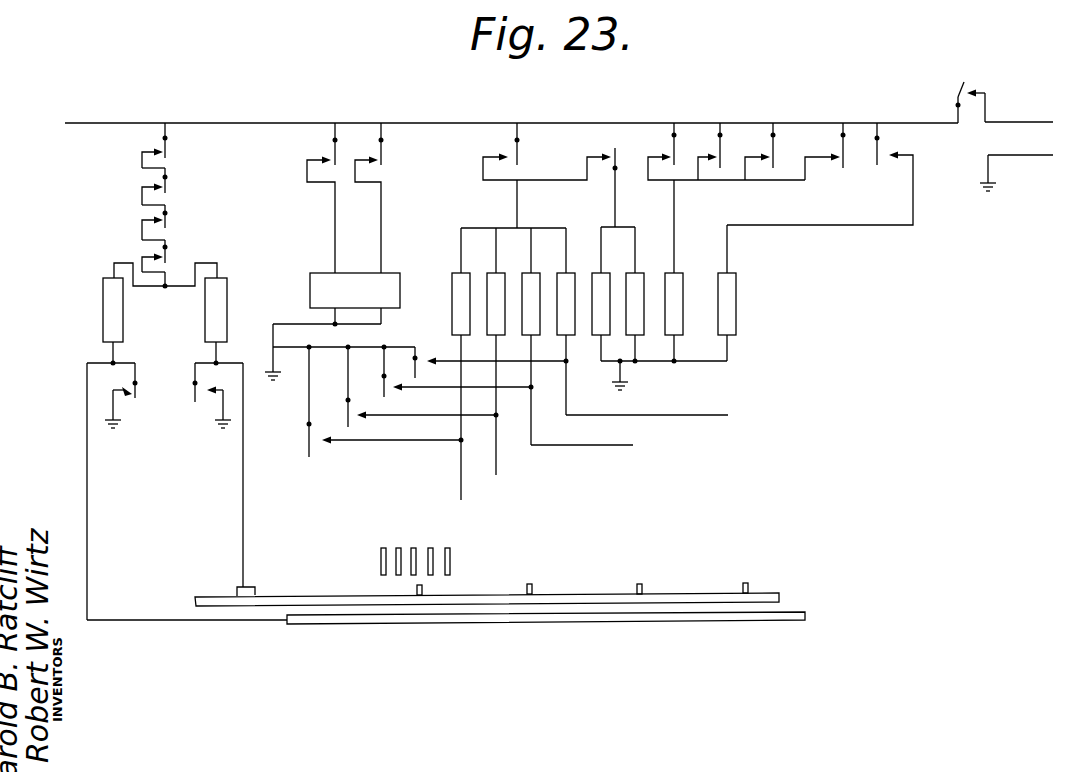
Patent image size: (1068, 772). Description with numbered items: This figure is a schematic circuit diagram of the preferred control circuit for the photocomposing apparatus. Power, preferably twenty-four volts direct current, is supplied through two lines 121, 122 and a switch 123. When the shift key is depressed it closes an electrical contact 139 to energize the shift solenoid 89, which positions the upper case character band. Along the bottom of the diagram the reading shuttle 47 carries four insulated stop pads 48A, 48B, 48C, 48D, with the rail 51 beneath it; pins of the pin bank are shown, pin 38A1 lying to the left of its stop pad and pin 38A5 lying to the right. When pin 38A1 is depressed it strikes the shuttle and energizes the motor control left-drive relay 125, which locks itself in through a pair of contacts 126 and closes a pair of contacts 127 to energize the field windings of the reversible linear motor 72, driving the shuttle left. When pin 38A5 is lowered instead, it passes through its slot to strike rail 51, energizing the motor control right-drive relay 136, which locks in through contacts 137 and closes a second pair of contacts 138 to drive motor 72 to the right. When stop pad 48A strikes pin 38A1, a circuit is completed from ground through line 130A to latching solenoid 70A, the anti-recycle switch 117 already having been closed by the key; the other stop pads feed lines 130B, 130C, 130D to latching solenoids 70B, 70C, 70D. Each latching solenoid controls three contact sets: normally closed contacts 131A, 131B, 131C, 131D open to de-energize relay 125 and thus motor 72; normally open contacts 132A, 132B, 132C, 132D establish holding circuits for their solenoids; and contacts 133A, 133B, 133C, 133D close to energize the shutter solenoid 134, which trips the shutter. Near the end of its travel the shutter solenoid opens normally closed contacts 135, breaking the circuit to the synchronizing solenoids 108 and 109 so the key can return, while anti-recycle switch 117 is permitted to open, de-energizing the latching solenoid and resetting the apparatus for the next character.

The normally closed contact pair 131A is at (172, 152).
The normally closed contacts 131B is at (172, 187).
The normally closed contacts 131C is at (172, 220).
The normally closed contacts 131D is at (172, 257).
The second pair of contacts 138 is at (330, 156).
The pair of contacts 127 is at (369, 170).
The anti-recycle switch 117 is at (510, 153).
The normally closed contacts 135 is at (608, 155).
The third set of contacts 133A is at (669, 153).
The normally open contacts 133B is at (715, 155).
The normally open contacts 133C is at (768, 154).
The normally open contacts 133D is at (838, 152).
The electrical contact 139 is at (884, 153).
The switch 123 is at (964, 82).
The line 122 is at (1022, 118).
The line 121 is at (1028, 160).
The motor control right-drive relay 136 is at (112, 303).
The motor control left-drive relay 125 is at (217, 293).
The reversible linear motor 72 is at (366, 301).
The latching solenoid 70A is at (462, 277).
The latching solenoid 70B is at (493, 277).
The latching solenoid 70C is at (528, 277).
The latching solenoid 70D is at (563, 277).
The synchronizing solenoid 108 is at (597, 277).
The synchronizing solenoid 109 is at (633, 277).
The shutter solenoid 134 is at (677, 278).
The shift solenoid 89 is at (732, 283).
The normally open contacts 132A is at (309, 443).
The normally open contacts 132B is at (346, 414).
The normally open contacts 132C is at (384, 395).
The normally open contacts 132D is at (433, 350).
The line 130A is at (461, 473).
The line 130B is at (496, 475).
The line 130C is at (612, 446).
The line 130D is at (692, 416).
The pair of contacts 137 is at (132, 398).
The pair of contacts 126 is at (208, 404).
The pin 38A1 is at (374, 554).
The pin 38A5 is at (450, 553).
The stop pad 48A is at (424, 590).
The stop pad 48B is at (534, 588).
The stop pad 48C is at (642, 587).
The stop pad 48D is at (750, 585).
The reading shuttle 47 is at (782, 596).
The rail 51 is at (807, 615).